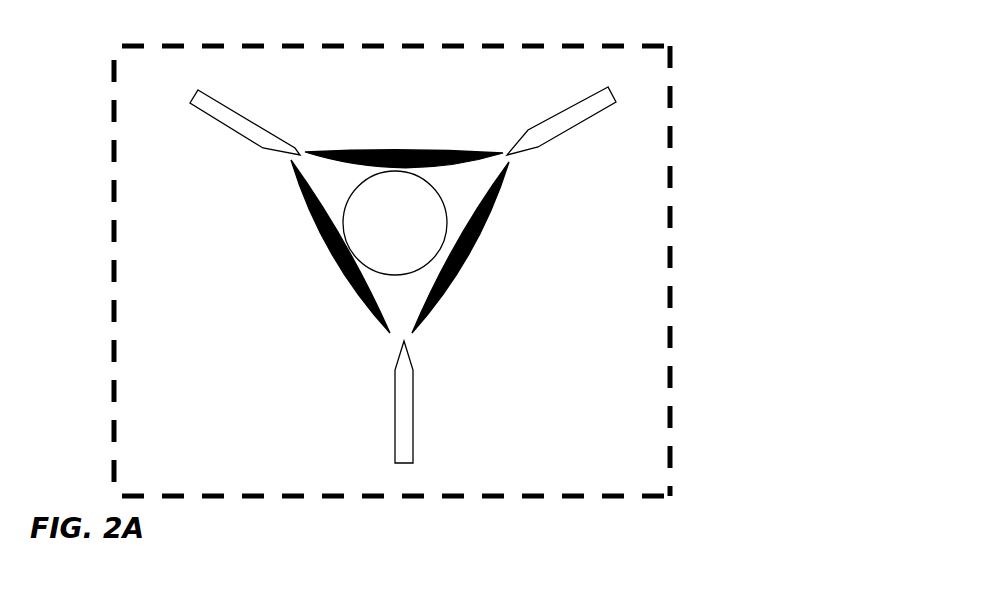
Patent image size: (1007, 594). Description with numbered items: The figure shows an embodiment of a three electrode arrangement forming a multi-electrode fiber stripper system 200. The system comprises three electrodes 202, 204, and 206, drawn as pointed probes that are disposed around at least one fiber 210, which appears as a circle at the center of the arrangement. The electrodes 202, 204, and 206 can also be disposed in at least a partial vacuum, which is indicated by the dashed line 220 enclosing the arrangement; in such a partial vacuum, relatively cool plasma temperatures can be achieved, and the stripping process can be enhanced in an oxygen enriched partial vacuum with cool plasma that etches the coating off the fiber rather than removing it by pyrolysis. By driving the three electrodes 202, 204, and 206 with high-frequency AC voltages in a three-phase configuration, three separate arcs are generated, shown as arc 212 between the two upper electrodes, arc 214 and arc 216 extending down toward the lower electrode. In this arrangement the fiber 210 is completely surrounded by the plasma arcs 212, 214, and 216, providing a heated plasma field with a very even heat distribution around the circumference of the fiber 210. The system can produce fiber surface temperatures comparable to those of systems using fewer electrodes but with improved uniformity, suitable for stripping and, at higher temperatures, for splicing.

The multi-electrode fiber stripper system 200 is at (690, 29).
The electrode 202 is at (220, 103).
The electrode 204 is at (565, 112).
The electrode 206 is at (413, 400).
The fiber 210 is at (368, 238).
The arc 212 is at (437, 150).
The arc 214 is at (462, 252).
The arc 216 is at (317, 233).
The dashed line 220 is at (200, 495).